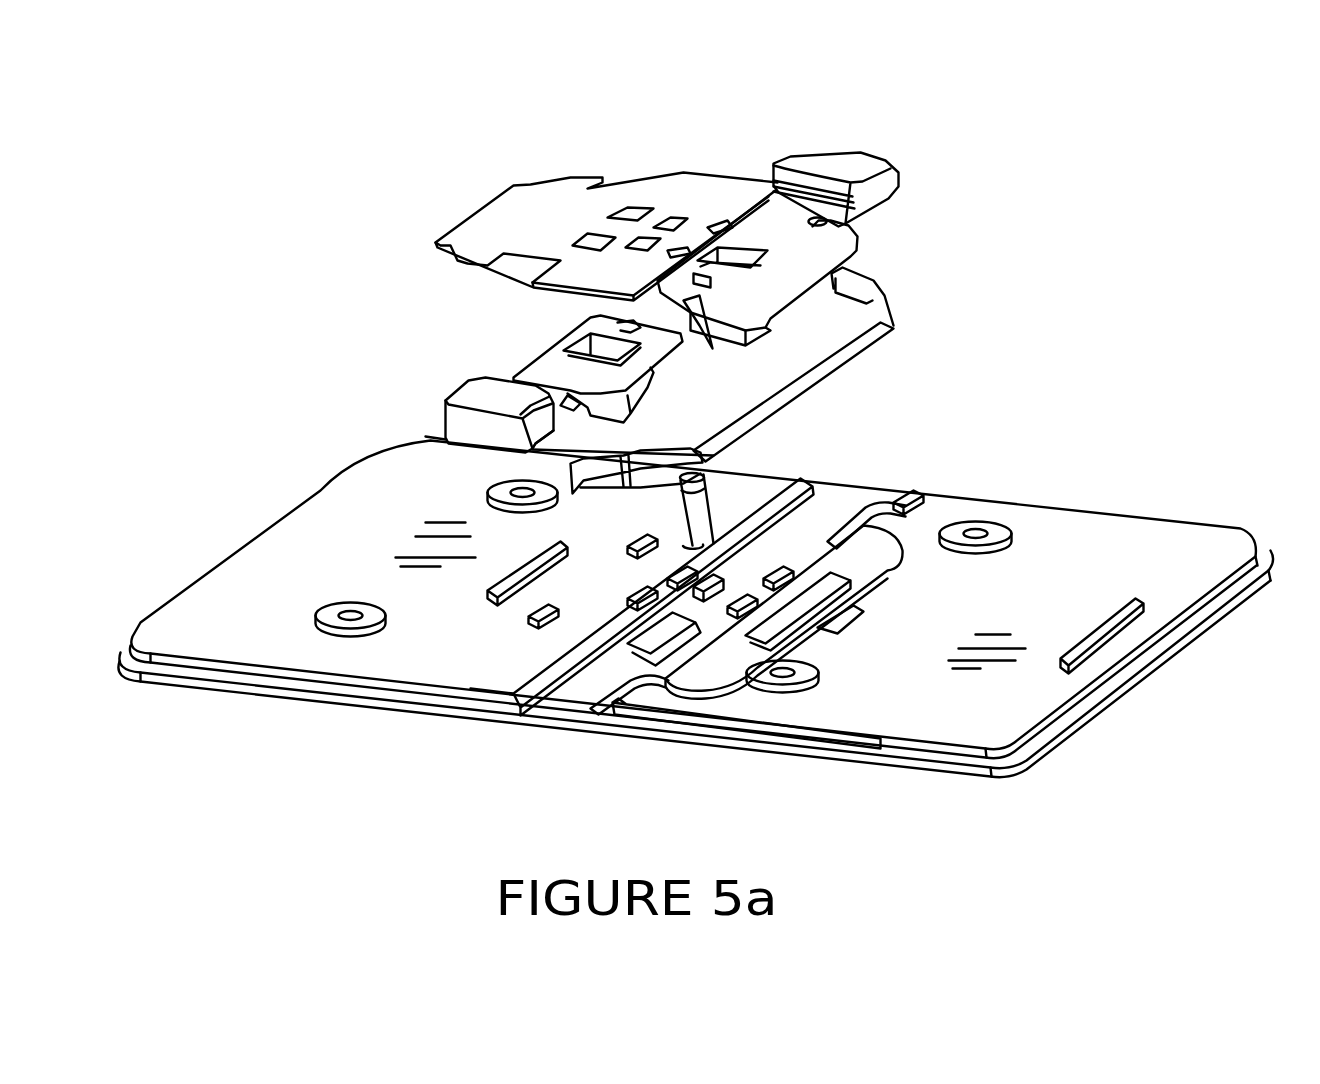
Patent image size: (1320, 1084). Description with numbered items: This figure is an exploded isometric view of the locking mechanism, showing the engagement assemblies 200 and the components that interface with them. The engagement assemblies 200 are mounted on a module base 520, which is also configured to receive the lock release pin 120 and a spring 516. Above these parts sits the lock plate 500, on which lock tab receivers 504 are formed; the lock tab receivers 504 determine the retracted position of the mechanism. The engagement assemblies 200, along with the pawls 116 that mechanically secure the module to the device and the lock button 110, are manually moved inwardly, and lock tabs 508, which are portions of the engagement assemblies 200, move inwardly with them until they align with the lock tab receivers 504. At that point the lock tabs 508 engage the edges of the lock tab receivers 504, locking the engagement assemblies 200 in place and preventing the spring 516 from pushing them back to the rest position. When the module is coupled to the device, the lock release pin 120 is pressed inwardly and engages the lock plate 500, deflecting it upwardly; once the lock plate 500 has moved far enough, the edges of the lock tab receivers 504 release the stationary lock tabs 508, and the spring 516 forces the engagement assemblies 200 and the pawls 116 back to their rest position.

The lock plate 500 is at (607, 185).
The lock tab receivers 504 is at (670, 213).
The lock button 110 is at (445, 402).
The pawls 116 is at (827, 267).
The spring 516 is at (893, 334).
The engagement assemblies 200 is at (578, 303).
The lock tabs 508 is at (716, 344).
The lock release pin 120 is at (703, 510).
The module base 520 is at (994, 765).